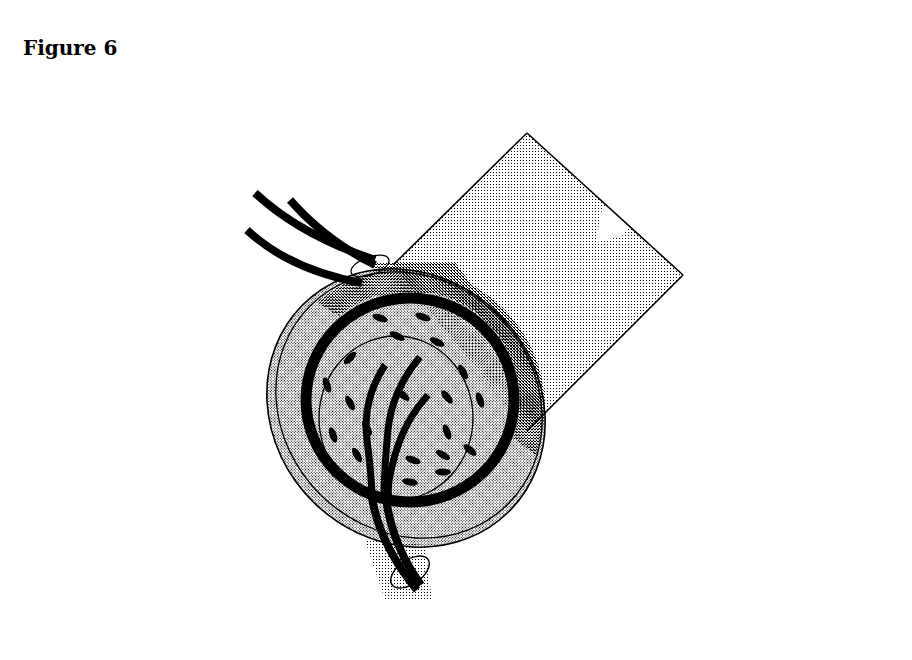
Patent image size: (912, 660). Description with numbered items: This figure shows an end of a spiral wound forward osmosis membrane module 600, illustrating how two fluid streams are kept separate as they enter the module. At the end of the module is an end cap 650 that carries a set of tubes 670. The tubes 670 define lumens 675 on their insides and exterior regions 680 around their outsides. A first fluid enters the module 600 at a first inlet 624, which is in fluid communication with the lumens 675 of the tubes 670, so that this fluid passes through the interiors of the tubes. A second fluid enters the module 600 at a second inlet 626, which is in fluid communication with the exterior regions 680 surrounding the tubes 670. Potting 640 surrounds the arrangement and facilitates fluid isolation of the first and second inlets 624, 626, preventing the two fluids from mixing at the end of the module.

The spiral wound forward osmosis membrane module 600 is at (155, 244).
The first inlet 624 is at (385, 556).
The second inlet 626 is at (381, 258).
The potting 640 is at (487, 472).
The end cap 650 is at (528, 436).
The tubes 670 is at (535, 332).
The lumens 675 is at (352, 364).
The exterior regions 680 is at (533, 350).